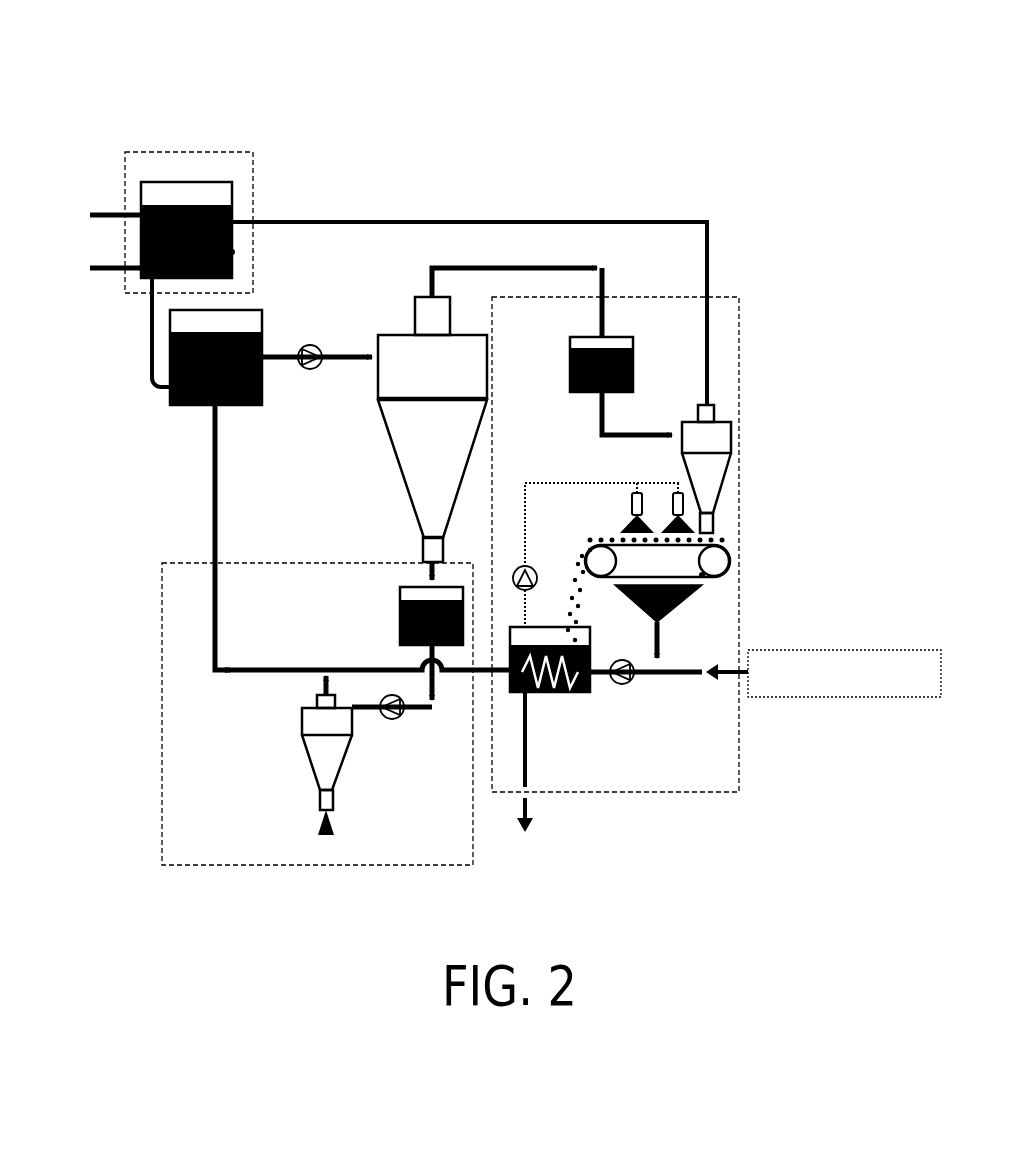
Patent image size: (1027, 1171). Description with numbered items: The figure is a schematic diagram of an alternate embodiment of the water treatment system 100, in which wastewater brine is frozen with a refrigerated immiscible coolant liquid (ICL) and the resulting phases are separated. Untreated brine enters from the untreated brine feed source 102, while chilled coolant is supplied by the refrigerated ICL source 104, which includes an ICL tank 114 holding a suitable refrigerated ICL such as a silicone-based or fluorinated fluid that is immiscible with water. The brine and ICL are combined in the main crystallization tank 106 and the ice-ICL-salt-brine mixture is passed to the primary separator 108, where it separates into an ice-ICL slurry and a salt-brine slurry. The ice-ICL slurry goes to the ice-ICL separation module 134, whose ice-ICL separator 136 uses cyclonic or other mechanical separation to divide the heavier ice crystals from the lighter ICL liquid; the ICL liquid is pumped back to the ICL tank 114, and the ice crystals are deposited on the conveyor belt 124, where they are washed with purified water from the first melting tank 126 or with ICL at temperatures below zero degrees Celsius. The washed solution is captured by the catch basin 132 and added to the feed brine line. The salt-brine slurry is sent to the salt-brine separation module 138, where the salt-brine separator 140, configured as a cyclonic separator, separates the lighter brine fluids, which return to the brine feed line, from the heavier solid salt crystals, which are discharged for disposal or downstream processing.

The water treatment system 100 is at (500, 92).
The untreated brine feed source 102 is at (844, 673).
The refrigerated ICL source 104 is at (200, 150).
The main crystallization tank 106 is at (170, 343).
The primary separator 108 is at (407, 425).
The ICL tank 114 is at (152, 178).
The conveyor belt 124 is at (657, 548).
The first melting tank 126 is at (535, 695).
The catch basin 132 is at (680, 600).
The ice-ICL separation module 134 is at (740, 782).
The ice-ICL separator 136 is at (713, 448).
The salt-brine separation module 138 is at (160, 600).
The salt-brine separator 140 is at (315, 732).